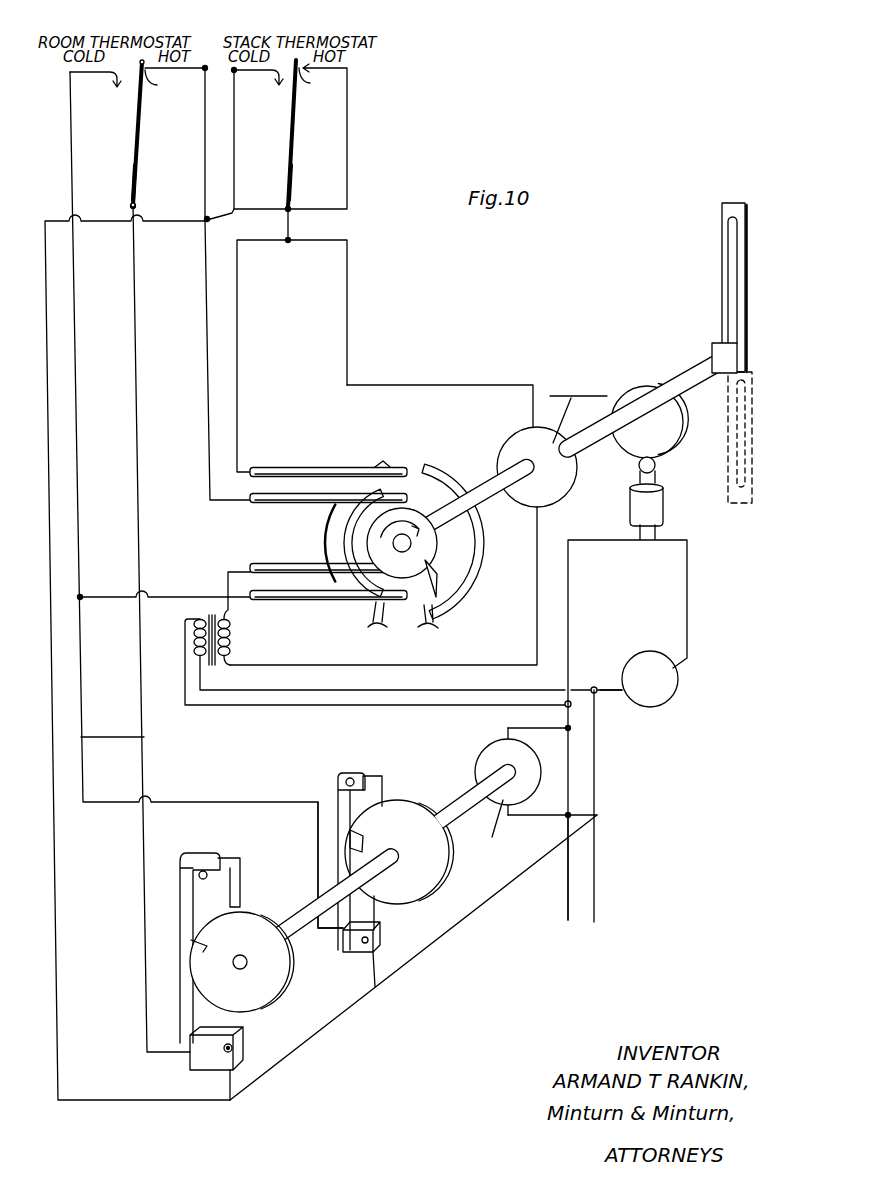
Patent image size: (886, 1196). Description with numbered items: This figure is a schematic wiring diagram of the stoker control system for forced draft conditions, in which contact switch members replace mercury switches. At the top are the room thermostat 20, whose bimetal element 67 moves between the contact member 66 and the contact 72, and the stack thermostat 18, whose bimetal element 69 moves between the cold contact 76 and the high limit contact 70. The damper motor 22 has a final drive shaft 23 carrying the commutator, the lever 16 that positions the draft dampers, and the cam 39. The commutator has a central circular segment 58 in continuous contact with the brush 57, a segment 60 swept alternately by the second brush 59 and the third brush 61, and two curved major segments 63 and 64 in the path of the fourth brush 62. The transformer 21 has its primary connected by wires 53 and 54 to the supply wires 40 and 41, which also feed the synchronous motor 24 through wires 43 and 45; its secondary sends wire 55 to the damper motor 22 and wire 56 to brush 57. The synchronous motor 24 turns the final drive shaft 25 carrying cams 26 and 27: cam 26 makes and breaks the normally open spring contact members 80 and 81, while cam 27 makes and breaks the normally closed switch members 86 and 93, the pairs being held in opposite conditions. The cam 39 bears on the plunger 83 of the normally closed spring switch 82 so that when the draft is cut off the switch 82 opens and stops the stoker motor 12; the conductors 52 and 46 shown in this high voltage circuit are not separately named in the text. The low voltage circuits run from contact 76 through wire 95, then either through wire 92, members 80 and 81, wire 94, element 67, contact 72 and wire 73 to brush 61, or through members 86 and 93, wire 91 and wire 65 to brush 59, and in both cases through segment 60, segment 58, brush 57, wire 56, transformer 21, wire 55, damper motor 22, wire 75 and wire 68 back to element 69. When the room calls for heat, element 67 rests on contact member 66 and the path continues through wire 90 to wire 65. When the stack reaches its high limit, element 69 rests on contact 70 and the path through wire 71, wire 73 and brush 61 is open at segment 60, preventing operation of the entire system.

The room thermostat contact member 66 is at (95, 88).
The room thermostat contact 72 is at (155, 89).
The room thermostat bimetal element 67 is at (137, 138).
The wire 73 is at (206, 132).
The room thermostat 20 is at (137, 178).
The stack thermostat cold contact 76 is at (259, 83).
The stack thermostat high limit contact 70 is at (317, 85).
The stack thermostat bimetal element 69 is at (291, 126).
The wire 95 is at (234, 165).
The stack thermostat 18 is at (293, 172).
The wire 71 is at (349, 150).
The wire 68 is at (291, 224).
The wire 94 is at (137, 333).
The wire 90 is at (79, 428).
The wire 91 is at (145, 735).
The wire 75 is at (460, 385).
The damper operating motor 22 is at (527, 441).
The final drive shaft 23 is at (493, 490).
The cam 39 is at (663, 442).
The lever 16 is at (746, 303).
The switch plunger 83 is at (640, 477).
The spring switch 82 is at (658, 508).
The fourth brush 62 is at (265, 470).
The third brush 61 is at (308, 503).
The brush 57 is at (290, 564).
The second brush 59 is at (286, 601).
The wire 56 is at (226, 573).
The central circular commutator segment 58 is at (470, 557).
The commutator segment 60 is at (438, 588).
The curved major commutator segment 63 is at (372, 622).
The curved major commutator segment 64 is at (427, 628).
The wire 65 is at (122, 595).
The transformer 21 is at (232, 636).
The wire 53 is at (285, 692).
The wire 54 is at (224, 707).
The wire 55 is at (396, 665).
The conductor 52 is at (689, 613).
The conductor 46 is at (612, 687).
The stoker motor 12 is at (670, 676).
The wire 45 is at (556, 727).
The synchronous motor 24 is at (503, 750).
The wire 43 is at (557, 816).
The supply wire 40 is at (597, 845).
The supply wire 41 is at (570, 893).
The cam 26 is at (402, 807).
The spring contact member 81 is at (345, 866).
The spring contact member 80 is at (376, 919).
The final drive shaft 25 is at (305, 908).
The cam 27 is at (275, 985).
The switch contact member 93 is at (190, 1012).
The switch contact member 86 is at (240, 1037).
The wire 92 is at (332, 1028).